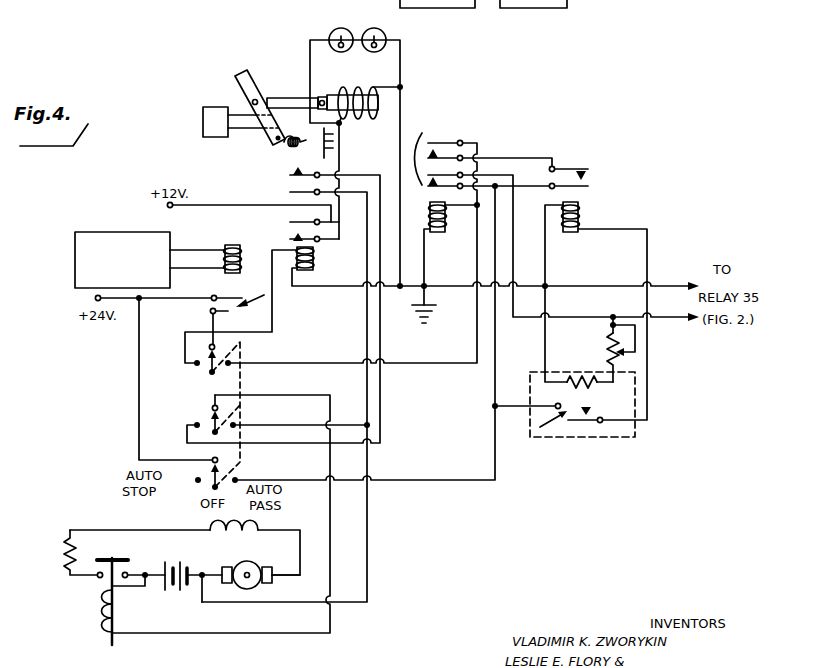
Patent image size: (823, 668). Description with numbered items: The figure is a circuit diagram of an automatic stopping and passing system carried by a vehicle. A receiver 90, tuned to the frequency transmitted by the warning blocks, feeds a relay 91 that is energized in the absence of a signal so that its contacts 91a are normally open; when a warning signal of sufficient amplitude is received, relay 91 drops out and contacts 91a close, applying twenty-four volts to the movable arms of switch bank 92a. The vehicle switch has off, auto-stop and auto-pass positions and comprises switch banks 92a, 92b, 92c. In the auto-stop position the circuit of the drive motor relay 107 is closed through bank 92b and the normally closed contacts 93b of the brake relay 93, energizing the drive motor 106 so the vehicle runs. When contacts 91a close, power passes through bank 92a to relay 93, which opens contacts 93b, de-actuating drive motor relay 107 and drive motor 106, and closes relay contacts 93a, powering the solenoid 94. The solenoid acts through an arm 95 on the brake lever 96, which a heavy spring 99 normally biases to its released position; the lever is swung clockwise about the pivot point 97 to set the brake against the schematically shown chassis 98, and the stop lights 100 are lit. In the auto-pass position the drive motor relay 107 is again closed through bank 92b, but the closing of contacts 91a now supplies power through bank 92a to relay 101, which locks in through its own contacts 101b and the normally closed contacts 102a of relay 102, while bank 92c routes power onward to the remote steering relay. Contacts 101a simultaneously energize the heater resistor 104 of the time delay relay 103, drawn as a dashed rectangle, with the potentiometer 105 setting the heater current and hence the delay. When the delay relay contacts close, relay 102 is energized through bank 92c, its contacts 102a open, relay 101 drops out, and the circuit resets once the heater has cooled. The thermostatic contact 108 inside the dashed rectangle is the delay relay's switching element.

The receiver 90 is at (110, 232).
The relay 91 is at (268, 284).
The contacts 91a is at (266, 300).
The switch bank 92a is at (203, 369).
The switch bank 92b is at (244, 417).
The switch bank 92c is at (243, 470).
The brake relay 93 is at (355, 266).
The relay contacts 93a is at (286, 232).
The normally closed contacts 93b is at (284, 180).
The solenoid 94 is at (357, 88).
The arm 95 is at (294, 96).
The brake lever 96 is at (244, 72).
The pivot point 97 is at (250, 129).
The chassis 98 is at (202, 126).
The heavy spring 99 is at (282, 143).
The stop lights 100 is at (369, 28).
The relay 101 is at (470, 261).
The contacts 101a is at (434, 144).
The contacts 101b is at (448, 138).
The relay 102 is at (590, 261).
The normally closed contacts 102a is at (595, 175).
The time delay relay 103 is at (586, 440).
The heater resistor 104 is at (572, 374).
The potentiometer 105 is at (632, 353).
The drive motor 106 is at (285, 553).
The drive motor relay 107 is at (82, 622).
The thermostat contact 108 is at (550, 429).